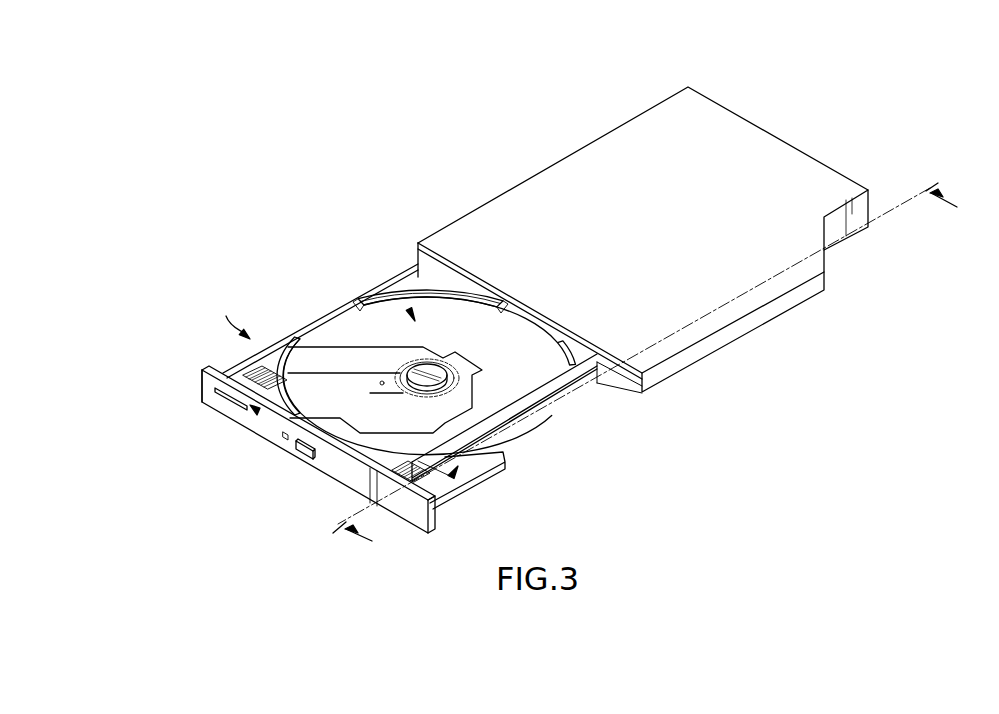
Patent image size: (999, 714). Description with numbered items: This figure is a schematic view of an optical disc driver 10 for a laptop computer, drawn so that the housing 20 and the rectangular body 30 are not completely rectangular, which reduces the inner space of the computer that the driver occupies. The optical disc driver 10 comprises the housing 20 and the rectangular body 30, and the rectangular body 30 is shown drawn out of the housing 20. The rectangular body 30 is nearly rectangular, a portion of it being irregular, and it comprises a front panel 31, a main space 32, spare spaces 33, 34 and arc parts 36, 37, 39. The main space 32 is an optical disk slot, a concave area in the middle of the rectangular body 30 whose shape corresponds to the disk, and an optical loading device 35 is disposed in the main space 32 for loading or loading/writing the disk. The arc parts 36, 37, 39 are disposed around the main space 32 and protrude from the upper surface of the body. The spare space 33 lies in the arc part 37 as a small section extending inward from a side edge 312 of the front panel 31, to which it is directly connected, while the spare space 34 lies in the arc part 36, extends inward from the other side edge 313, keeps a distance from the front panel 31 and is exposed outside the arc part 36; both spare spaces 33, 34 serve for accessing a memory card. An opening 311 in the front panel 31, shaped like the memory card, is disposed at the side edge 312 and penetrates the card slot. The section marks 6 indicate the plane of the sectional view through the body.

The optical disc driver 10 is at (334, 134).
The housing 20 is at (796, 167).
The rectangular body 30 is at (312, 326).
The front panel 31 is at (335, 469).
The opening 311 is at (230, 402).
The side edge 312 is at (200, 383).
The side edge 313 is at (430, 518).
The main space 32 is at (393, 290).
The spare space 33 is at (266, 420).
The spare space 34 is at (487, 472).
The optical loading device 35 is at (387, 368).
The arc part 36 is at (503, 450).
The arc part 37 is at (282, 352).
The arc part 39 is at (413, 273).
The section line 6- 6 is at (650, 371).